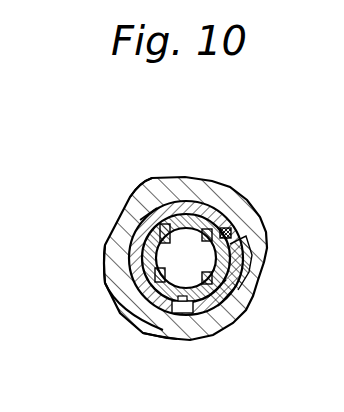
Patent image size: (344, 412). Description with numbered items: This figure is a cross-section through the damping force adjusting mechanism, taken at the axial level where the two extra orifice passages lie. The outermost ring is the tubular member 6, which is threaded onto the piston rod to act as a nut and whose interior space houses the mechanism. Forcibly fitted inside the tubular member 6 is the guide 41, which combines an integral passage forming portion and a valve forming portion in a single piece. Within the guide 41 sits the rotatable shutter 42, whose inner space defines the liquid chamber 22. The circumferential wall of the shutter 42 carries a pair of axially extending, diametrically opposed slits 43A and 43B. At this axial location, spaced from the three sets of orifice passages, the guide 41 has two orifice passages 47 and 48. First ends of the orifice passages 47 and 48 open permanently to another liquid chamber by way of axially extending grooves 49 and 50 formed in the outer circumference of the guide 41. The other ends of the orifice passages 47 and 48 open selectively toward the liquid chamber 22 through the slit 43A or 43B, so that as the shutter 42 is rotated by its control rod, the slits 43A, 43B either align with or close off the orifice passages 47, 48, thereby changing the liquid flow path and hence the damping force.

The tubular member 6 is at (223, 201).
The guide 41 is at (153, 203).
The shutter 42 is at (108, 263).
The slit 43A is at (190, 225).
The slit 43B is at (217, 310).
The orifice passage 47 is at (148, 336).
The orifice passage 48 is at (243, 265).
The axially extending groove 49 is at (188, 315).
The axially extending groove 50 is at (234, 228).
The liquid chamber 22 is at (222, 284).